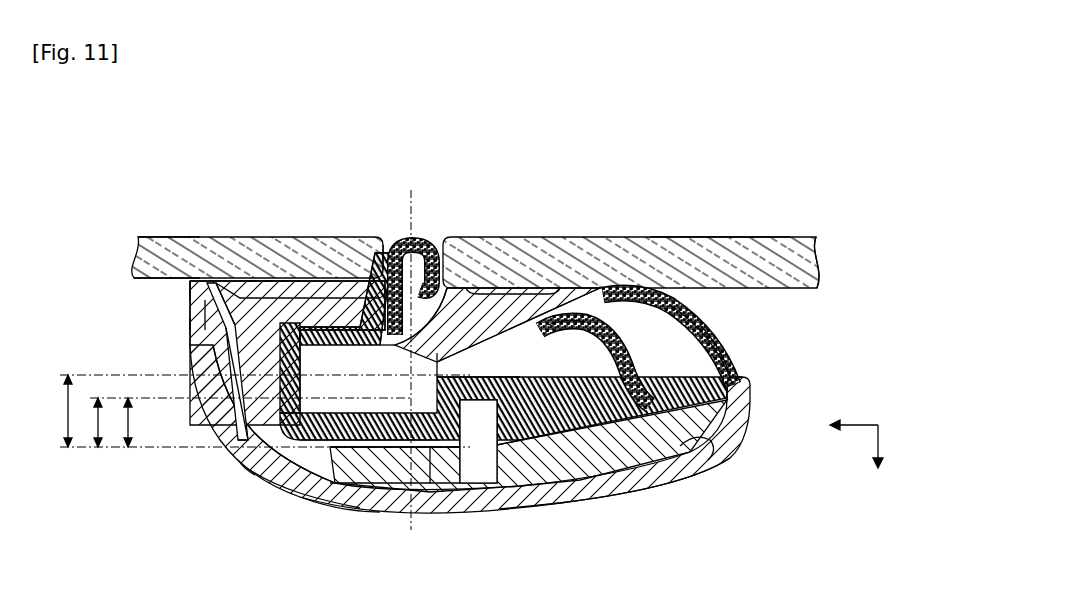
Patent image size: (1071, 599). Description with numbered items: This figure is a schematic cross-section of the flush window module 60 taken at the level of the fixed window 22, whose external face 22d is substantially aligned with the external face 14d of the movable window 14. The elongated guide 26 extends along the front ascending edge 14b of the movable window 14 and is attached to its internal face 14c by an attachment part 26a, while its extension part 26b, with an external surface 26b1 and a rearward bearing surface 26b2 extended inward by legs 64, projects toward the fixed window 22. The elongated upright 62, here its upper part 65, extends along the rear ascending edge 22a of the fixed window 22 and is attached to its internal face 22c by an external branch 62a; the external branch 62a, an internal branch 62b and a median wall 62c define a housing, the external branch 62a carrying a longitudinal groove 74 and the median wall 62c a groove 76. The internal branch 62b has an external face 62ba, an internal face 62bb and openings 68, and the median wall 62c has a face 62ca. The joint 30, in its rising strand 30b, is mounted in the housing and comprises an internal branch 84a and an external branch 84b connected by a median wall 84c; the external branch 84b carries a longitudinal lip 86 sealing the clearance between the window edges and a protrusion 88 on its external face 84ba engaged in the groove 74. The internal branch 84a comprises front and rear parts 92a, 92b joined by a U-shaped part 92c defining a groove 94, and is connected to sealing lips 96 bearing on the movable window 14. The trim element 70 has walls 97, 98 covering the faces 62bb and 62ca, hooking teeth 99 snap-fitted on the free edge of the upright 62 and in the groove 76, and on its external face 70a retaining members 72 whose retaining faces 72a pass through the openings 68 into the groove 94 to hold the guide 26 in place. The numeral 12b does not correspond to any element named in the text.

The movable window 14 is at (668, 230).
The front ascending edge 14b is at (480, 292).
The internal face 14c is at (814, 292).
The external face 14d is at (713, 237).
The fixed window 22 is at (237, 216).
The rear ascending edge 22a is at (386, 238).
The internal face 22c is at (133, 286).
The external face 22d is at (142, 236).
The elongated guide 26 is at (401, 354).
The attachment part 26a is at (508, 326).
The extension part 26b is at (262, 482).
The external surface 26b1 is at (222, 418).
The bearing surface 26b2 is at (487, 345).
The joint 30 is at (807, 345).
The rising strand 30b is at (807, 345).
The door opening edge 12b is at (765, 350).
The flush window module 60 is at (578, 546).
The elongated upright 62 is at (466, 377).
The upper part 65 is at (466, 377).
The external branch 62a is at (262, 305).
The internal branch 62b is at (660, 466).
The external face 62ba is at (722, 346).
The internal face 62bb is at (712, 470).
The median wall 62c is at (186, 361).
The face 62ca is at (238, 368).
The legs 64 is at (345, 500).
The openings 68 is at (477, 488).
The trim element 70 is at (195, 448).
The external face 70a is at (430, 476).
The retaining members 72 is at (413, 479).
The retaining faces 72a is at (405, 496).
The longitudinal groove 74 is at (312, 302).
The longitudinal groove 76 is at (232, 320).
The internal branch 84a is at (652, 400).
The external branch 84b is at (375, 292).
The external face 84ba is at (298, 332).
The median wall 84c is at (214, 345).
The longitudinal lip 86 is at (420, 256).
The longitudinal protrusion 88 is at (352, 330).
The front part 92a is at (248, 470).
The rear part 92b is at (600, 488).
The U-shaped part 92c is at (530, 302).
The longitudinal groove 94 is at (505, 402).
The sealing lips 96 is at (679, 285).
The wall 97 is at (536, 498).
The wall 98 is at (180, 276).
The hooking tooth 99 is at (205, 300).